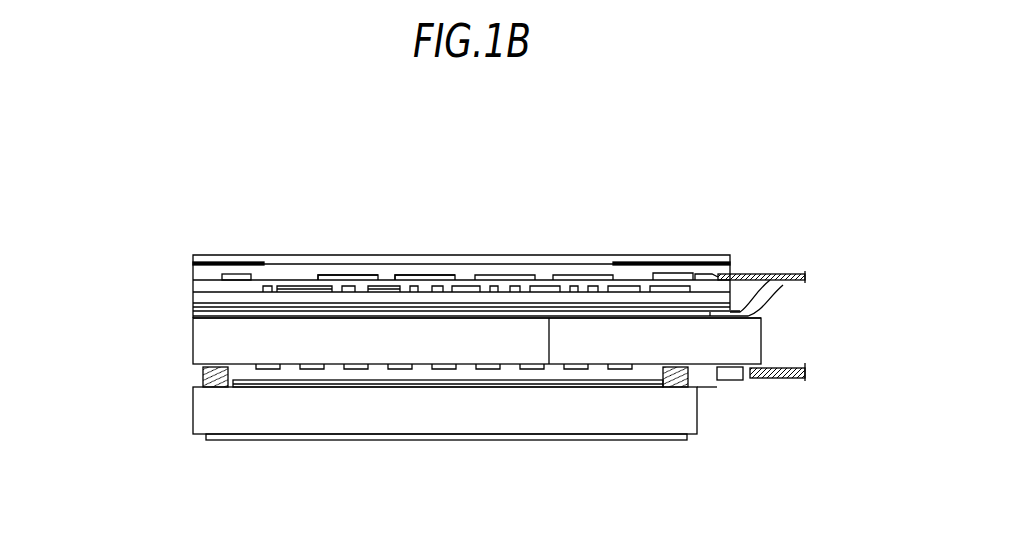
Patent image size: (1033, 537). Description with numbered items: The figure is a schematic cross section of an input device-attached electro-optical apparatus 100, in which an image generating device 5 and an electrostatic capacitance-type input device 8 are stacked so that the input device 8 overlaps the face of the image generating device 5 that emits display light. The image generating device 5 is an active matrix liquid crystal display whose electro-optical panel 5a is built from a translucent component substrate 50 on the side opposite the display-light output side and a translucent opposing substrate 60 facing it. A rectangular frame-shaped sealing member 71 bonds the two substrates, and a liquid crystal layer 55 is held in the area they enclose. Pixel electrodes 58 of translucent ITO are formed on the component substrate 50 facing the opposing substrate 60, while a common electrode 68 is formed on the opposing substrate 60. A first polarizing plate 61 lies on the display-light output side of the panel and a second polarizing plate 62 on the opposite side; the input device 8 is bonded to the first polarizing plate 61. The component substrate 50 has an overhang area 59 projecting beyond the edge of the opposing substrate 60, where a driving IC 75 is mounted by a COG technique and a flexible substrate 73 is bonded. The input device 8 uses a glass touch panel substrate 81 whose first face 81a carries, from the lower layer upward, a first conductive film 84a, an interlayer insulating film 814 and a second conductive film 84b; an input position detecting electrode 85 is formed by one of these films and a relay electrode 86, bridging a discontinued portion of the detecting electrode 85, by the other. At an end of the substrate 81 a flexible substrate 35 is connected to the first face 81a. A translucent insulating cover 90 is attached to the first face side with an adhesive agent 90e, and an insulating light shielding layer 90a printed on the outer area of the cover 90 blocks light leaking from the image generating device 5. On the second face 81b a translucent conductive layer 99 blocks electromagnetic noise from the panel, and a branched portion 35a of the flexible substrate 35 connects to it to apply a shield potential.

The input device-attached electro-optical apparatus 100 is at (141, 182).
The electrostatic capacitance-type input device 8 is at (842, 207).
The cover 90 is at (275, 255).
The light shielding layer 90a is at (227, 258).
The adhesive agent 90e is at (345, 267).
The first conductive film 84a is at (368, 288).
The interlayer insulating film 814 is at (422, 290).
The second conductive film 84b is at (447, 275).
The relay electrode 86 is at (421, 219).
The first face 81a is at (548, 273).
The second face 81b is at (607, 295).
The touch panel substrate 81 is at (617, 302).
The input position detecting electrode 85 is at (533, 290).
The conductive layer 99 is at (200, 307).
The flexible substrate 35 is at (762, 272).
The branched portion 35a is at (790, 292).
The image generating device 5 is at (92, 313).
The first polarizing plate 61 is at (193, 317).
The component substrate 50 is at (193, 343).
The electro-optical panel 5a is at (551, 352).
The pixel electrodes 58 is at (313, 369).
The common electrode 68 is at (357, 383).
The liquid crystal layer 55 is at (403, 380).
The opposing substrate 60 is at (193, 400).
The second polarizing plate 62 is at (205, 437).
The sealing member 71 is at (680, 378).
The driving IC 75 is at (732, 378).
The flexible substrate 73 is at (785, 378).
The overhang area 59 is at (725, 402).